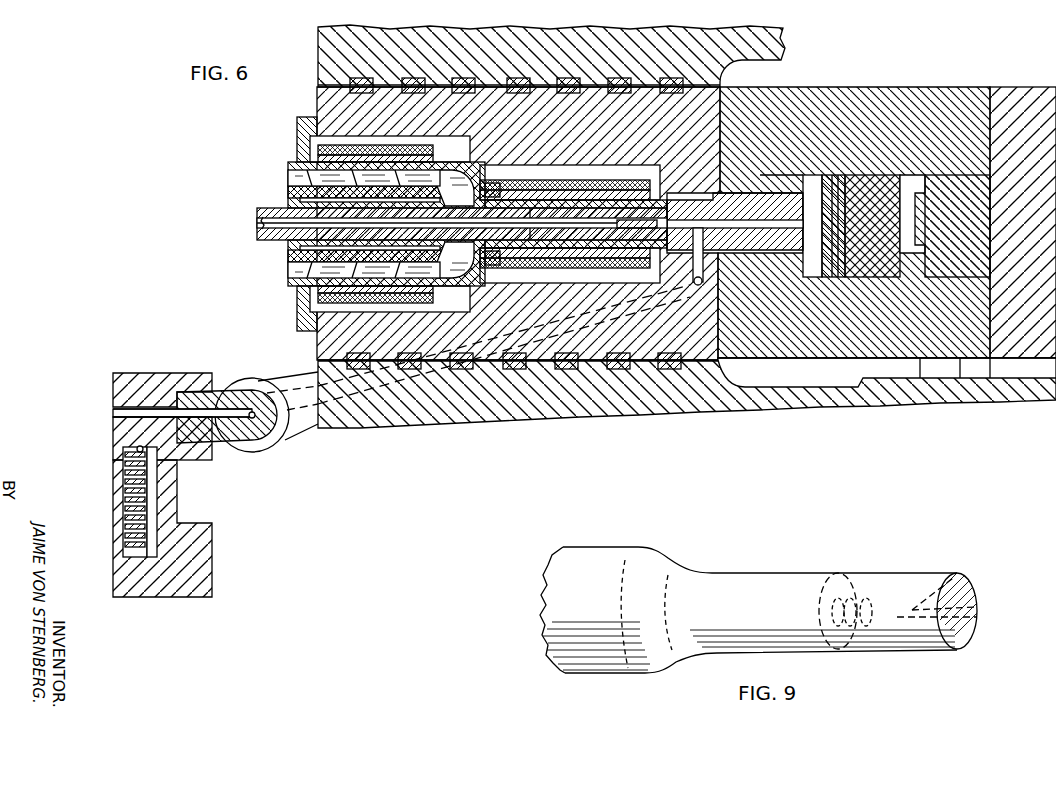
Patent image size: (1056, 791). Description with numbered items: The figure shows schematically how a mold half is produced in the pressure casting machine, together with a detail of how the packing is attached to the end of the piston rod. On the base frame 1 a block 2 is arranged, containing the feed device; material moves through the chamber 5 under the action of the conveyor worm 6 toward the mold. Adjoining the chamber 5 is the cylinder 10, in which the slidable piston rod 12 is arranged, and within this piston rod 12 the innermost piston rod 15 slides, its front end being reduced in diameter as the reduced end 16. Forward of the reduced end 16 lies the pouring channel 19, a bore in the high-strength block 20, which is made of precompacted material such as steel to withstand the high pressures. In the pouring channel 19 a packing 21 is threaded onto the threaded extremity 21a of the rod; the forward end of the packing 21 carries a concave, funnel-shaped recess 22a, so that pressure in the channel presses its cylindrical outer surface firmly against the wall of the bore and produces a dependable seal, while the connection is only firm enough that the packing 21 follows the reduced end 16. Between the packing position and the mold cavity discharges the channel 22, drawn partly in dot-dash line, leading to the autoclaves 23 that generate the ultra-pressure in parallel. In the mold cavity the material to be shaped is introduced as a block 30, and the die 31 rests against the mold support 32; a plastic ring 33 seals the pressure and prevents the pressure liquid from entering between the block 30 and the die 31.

In FIG. 6, the base frame 1 is at (660, 400).
In FIG. 6, the block 2 is at (587, 361).
In FIG. 6, the chamber 5 is at (290, 272).
In FIG. 6, the conveyor worm 6 is at (290, 250).
In FIG. 6, the cylinder 10 is at (573, 208).
In FIG. 6, the piston rod 12 is at (515, 240).
In FIG. 6, the piston rod 15 is at (270, 208).
In FIG. 9, the piston rod 15 is at (597, 557).
In FIG. 6, the reduced end 16 is at (632, 220).
In FIG. 9, the reduced end 16 is at (754, 582).
In FIG. 6, the pouring channel 19 is at (757, 228).
In FIG. 6, the block 20 is at (747, 193).
In FIG. 9, the packing 21 is at (933, 578).
In FIG. 9, the threaded extremity 21a is at (855, 598).
In FIG. 6, the channel 22 is at (690, 282).
In FIG. 9, the funnel-shaped recess 22a is at (975, 608).
In FIG. 6, the autoclaves 23 is at (113, 446).
In FIG. 6, the block 30 is at (875, 180).
In FIG. 6, the die 31 is at (940, 175).
In FIG. 6, the mold support 32 is at (1022, 88).
In FIG. 6, the plastic ring 33 is at (842, 175).